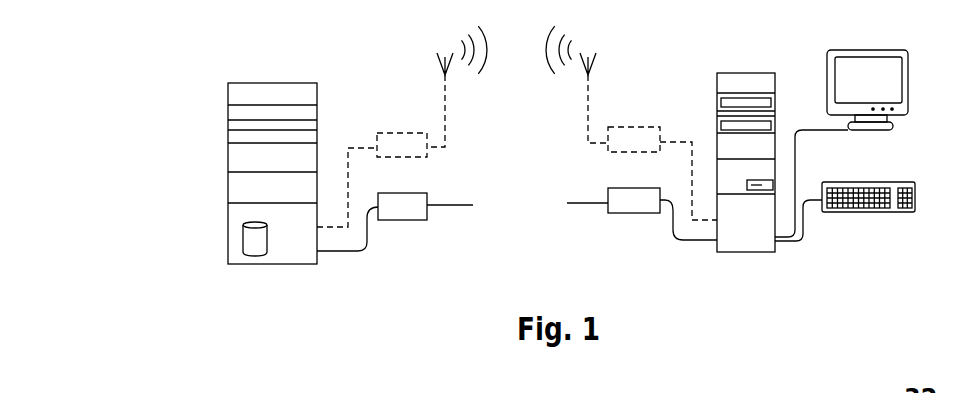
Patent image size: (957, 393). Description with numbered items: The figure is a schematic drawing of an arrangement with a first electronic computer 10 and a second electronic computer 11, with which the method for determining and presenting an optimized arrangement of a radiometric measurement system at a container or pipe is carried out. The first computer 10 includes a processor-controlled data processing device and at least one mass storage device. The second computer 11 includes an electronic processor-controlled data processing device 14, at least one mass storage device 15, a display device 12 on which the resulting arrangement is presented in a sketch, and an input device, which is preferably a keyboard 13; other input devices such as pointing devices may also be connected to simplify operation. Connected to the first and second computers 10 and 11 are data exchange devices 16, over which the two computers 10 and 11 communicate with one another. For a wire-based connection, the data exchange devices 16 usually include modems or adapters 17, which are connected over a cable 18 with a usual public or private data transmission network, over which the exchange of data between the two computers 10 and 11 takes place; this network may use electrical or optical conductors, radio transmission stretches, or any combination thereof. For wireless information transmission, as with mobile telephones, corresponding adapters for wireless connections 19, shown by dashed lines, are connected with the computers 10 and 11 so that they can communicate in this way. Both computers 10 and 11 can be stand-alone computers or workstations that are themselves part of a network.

The first electronic computer 10 is at (183, 132).
The second electronic computer 11 is at (712, 95).
The display device 12 is at (903, 114).
The keyboard 13 is at (897, 213).
The processor-controlled data processing device 14 is at (768, 246).
The mass storage device 15 is at (737, 183).
The data exchange devices 16 is at (572, 165).
The modems or adapters 17 is at (405, 220).
The cable 18 is at (452, 207).
The adapters for wireless connections 19 is at (400, 136).